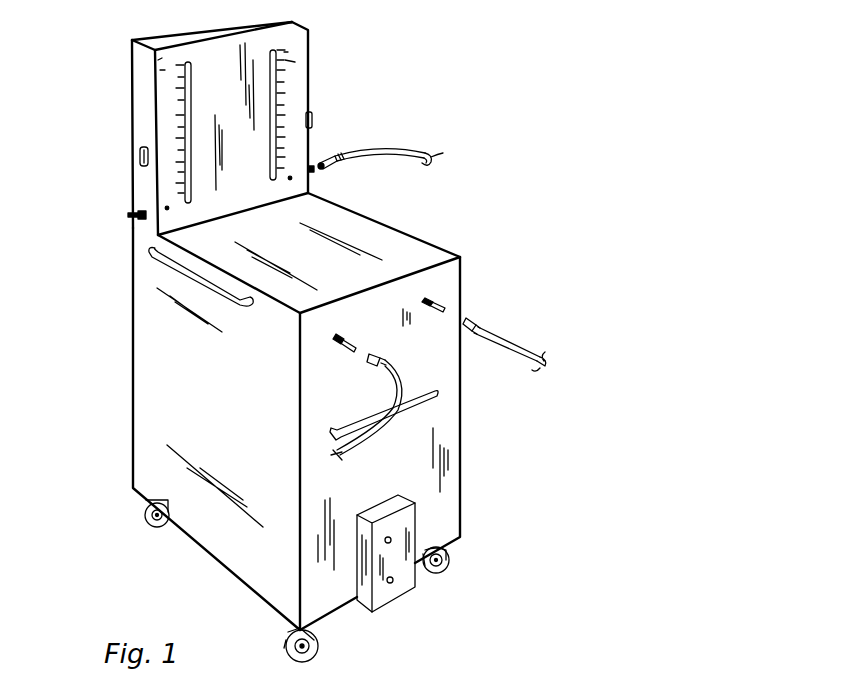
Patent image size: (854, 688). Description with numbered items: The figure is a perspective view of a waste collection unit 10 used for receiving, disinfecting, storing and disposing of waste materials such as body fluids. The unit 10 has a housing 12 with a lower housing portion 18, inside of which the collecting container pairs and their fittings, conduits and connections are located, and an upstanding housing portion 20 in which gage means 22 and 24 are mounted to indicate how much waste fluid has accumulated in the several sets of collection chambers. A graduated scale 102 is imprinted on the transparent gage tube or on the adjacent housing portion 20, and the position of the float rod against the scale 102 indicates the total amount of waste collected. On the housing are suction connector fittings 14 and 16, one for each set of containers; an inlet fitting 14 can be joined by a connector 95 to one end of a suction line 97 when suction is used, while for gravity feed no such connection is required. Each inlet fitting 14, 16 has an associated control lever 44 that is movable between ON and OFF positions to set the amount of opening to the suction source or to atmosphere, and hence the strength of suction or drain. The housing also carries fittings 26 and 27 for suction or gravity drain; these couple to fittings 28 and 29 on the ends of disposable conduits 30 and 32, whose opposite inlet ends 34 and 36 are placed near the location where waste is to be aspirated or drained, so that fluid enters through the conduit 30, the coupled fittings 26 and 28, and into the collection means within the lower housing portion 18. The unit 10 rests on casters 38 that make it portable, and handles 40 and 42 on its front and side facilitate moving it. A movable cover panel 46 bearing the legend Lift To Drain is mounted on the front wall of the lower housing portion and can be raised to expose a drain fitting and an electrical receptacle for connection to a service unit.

The waste collection unit 10 is at (484, 72).
The housing 12 is at (464, 373).
The suction connector fitting 14 is at (313, 170).
The suction connector fitting 16 is at (128, 215).
The lower housing portion 18 is at (455, 483).
The upstanding housing portion 20 is at (308, 80).
The gage means 22 is at (280, 58).
The gage means 24 is at (165, 88).
The fitting 26 is at (433, 300).
The fitting 27 is at (350, 332).
The fitting 28 is at (477, 323).
The fitting 29 is at (380, 365).
The conduit 30 is at (517, 343).
The conduit 32 is at (383, 433).
The inlet end 34 is at (540, 360).
The inlet end 36 is at (337, 457).
The casters 38 is at (140, 510).
The handle 40 is at (433, 397).
The handle 42 is at (173, 273).
The control lever 44 is at (137, 150).
The movable cover panel 46 is at (403, 522).
The connector 95 is at (332, 153).
The suction line 97 is at (417, 147).
The graduated scale 102 is at (182, 170).